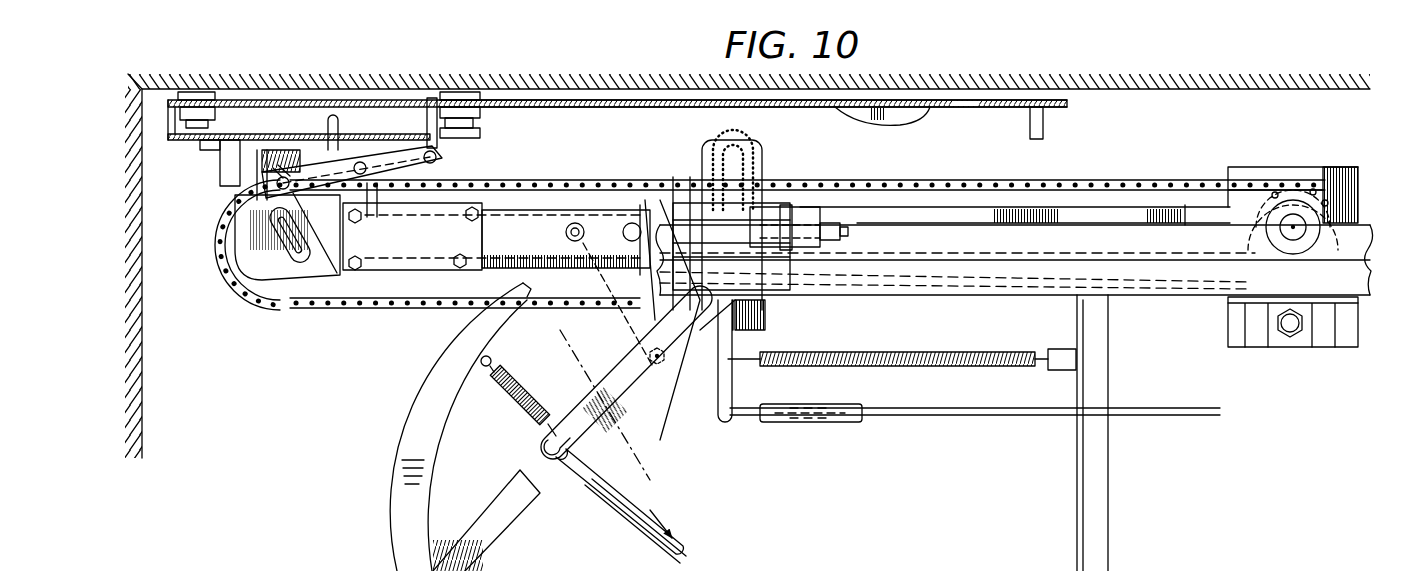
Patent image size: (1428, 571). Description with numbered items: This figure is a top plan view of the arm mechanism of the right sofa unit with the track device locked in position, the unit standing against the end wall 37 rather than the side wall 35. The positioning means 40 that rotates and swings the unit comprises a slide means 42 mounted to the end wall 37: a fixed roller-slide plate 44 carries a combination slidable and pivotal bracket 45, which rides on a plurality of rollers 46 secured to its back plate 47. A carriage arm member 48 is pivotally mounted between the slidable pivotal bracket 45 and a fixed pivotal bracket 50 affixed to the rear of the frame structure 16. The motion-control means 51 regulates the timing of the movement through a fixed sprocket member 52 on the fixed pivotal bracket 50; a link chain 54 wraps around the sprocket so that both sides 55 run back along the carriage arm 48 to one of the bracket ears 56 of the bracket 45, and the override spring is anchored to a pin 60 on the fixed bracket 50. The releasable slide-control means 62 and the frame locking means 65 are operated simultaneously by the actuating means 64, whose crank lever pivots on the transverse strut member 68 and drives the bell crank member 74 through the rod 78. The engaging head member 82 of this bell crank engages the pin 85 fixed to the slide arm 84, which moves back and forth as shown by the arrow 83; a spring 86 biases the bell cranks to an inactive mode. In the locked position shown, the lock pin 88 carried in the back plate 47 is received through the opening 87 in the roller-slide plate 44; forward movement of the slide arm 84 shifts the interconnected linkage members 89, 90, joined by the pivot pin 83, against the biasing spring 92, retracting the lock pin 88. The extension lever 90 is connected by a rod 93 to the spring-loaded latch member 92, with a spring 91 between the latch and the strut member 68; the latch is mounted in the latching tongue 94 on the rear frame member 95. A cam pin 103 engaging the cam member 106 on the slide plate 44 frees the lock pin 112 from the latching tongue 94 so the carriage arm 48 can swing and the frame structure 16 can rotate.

The frame structure 16 is at (402, 444).
The side wall 35 is at (143, 387).
The end wall 37 is at (1102, 100).
The positioning means 40 is at (412, 328).
The slide means 42 is at (220, 154).
The roller-slide plate 44 is at (624, 108).
The slidable and pivotal bracket 45 is at (267, 282).
The rollers 46 is at (207, 98).
The back plate 47 is at (243, 140).
The carriage arm member 48 is at (922, 217).
The fixed pivotal bracket 50 is at (1358, 182).
The motion-control means 51 is at (220, 274).
The fixed sprocket member 52 is at (1287, 193).
The link chain 54 is at (561, 180).
The sides of the link chain 55 is at (382, 311).
The bracket plates or ears 56 is at (288, 303).
The pin 60 is at (1304, 193).
The releasable slide-control means 62 is at (275, 224).
The actuating means 64 is at (636, 405).
The frame locking means 65 is at (787, 208).
The transverse strut member 68 is at (1112, 470).
The bell crank member 74 is at (588, 396).
The rod 78 is at (632, 528).
The engaging head member 82 is at (675, 195).
The arrow / pivot pin 83 is at (270, 181).
The slide arm 84 is at (513, 237).
The pin 85 is at (625, 232).
The spring 86 is at (517, 407).
The opening 87 is at (422, 100).
The lock pin 88 is at (435, 95).
The linkage member 89 is at (276, 247).
The linkage member 90 is at (262, 208).
The spring 91 is at (364, 162).
The spring-loaded latch member / biasing spring 92 is at (273, 150).
The rod 93 is at (993, 416).
The latching tongue 94 is at (764, 160).
The rear frame member 95 is at (963, 282).
The cam pin 103 is at (333, 150).
The cam member 106 is at (898, 113).
The lock pin 112 is at (800, 230).